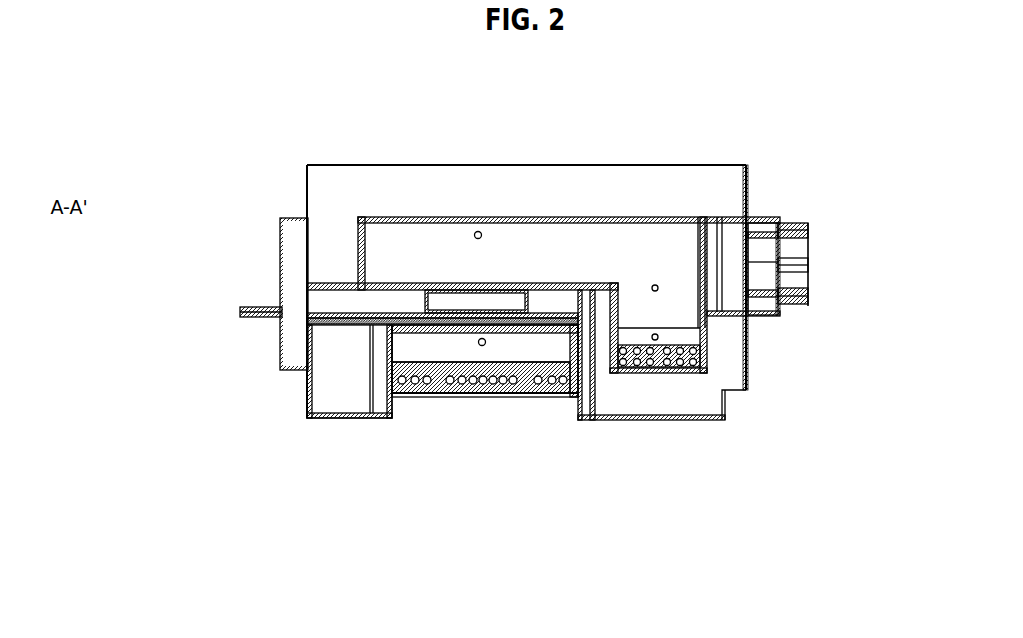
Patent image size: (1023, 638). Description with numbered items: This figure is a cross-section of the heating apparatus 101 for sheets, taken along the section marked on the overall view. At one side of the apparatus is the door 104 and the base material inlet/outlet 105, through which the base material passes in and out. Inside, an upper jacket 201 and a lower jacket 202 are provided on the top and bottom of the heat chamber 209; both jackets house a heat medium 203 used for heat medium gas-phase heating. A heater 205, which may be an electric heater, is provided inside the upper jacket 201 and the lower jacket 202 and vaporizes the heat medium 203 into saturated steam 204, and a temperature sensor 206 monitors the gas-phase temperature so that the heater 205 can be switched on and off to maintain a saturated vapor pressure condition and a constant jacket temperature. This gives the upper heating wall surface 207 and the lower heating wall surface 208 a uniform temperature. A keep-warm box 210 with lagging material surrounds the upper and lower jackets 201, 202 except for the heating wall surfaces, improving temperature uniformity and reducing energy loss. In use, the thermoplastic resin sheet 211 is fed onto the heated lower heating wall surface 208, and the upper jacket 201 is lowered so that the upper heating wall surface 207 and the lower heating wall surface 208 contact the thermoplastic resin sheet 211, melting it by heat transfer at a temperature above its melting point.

The heating apparatus 101 is at (226, 151).
The door 104 is at (297, 297).
The base material inlet/outlet 105 is at (365, 322).
The upper jacket 201 is at (580, 217).
The lower jacket 202 is at (512, 323).
The heat medium 203 is at (727, 424).
The saturated steam 204 is at (432, 353).
The heater for heat medium 205 is at (545, 378).
The temperature sensor 206 is at (482, 342).
The upper heating wall surface 207 is at (498, 283).
The lower heating wall surface 208 is at (493, 397).
The heat chamber 209 is at (620, 307).
The keep-warm box 210 is at (660, 200).
The thermoplastic resin sheet 211 is at (457, 283).